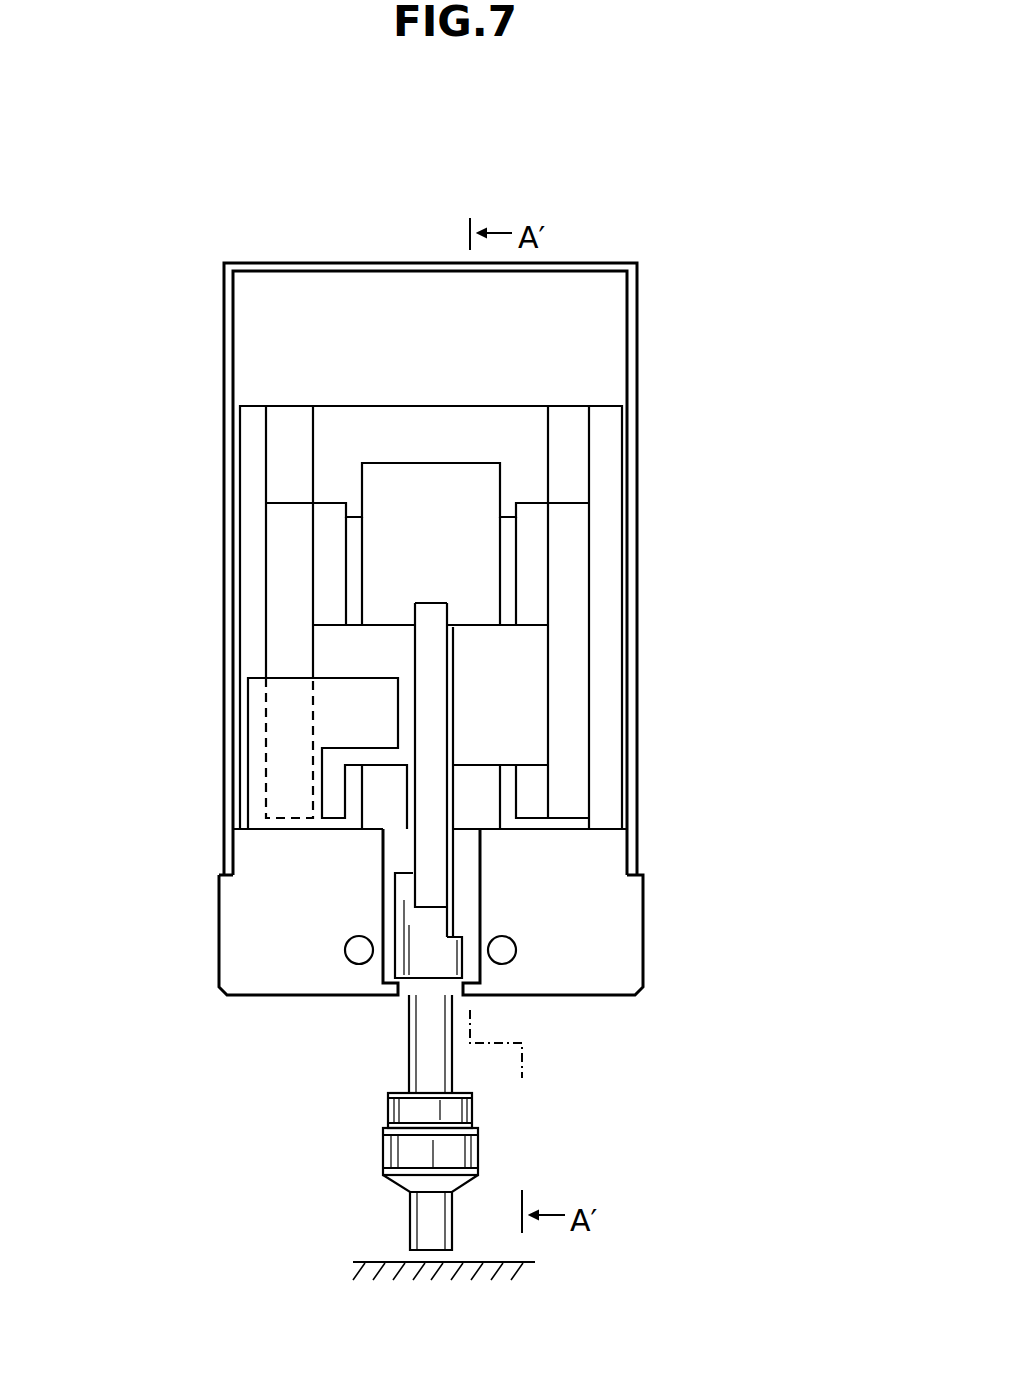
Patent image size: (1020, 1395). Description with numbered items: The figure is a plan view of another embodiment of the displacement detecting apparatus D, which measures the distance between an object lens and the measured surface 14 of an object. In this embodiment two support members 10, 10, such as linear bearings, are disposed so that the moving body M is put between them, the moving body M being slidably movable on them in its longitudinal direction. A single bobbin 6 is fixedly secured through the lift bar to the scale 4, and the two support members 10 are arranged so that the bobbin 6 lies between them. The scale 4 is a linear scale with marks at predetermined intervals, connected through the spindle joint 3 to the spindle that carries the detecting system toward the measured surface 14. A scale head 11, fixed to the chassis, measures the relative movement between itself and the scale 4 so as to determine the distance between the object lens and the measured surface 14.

The displacement detecting apparatus D is at (660, 297).
The moving body M is at (338, 609).
The support member 10 is at (278, 543).
The bobbin 6 is at (535, 716).
The scale head 11 is at (278, 795).
The scale 4 is at (423, 857).
The spindle joint 3 is at (455, 955).
The measured surface 14 is at (478, 1278).